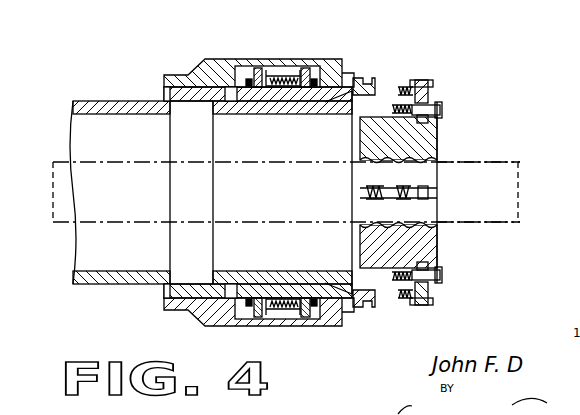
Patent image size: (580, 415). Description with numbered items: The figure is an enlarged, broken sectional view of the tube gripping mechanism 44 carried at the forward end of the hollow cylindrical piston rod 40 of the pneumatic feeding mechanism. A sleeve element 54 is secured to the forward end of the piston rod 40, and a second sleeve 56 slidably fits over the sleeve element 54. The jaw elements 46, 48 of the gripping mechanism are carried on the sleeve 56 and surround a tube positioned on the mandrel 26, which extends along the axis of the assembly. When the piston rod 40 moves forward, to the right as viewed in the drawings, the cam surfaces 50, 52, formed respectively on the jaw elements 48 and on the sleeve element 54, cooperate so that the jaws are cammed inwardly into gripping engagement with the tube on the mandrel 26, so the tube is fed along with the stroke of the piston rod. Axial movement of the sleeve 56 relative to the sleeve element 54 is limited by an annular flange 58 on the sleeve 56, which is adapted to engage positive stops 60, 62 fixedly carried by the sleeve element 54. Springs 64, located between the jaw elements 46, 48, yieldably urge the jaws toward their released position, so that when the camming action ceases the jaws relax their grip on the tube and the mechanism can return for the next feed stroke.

The piston rod 40 is at (122, 101).
The tube gripping mechanism 44 is at (377, 316).
The sleeve element 54 is at (240, 117).
The sleeve 56 is at (353, 84).
The annular flange 58 is at (284, 76).
The positive stop 60 is at (263, 75).
The positive stop 62 is at (307, 72).
The cam surface 50 is at (383, 98).
The jaw element 48 is at (440, 137).
The jaw element 46 is at (441, 250).
The cam surface 52 is at (360, 263).
The spring 64 is at (378, 192).
The mandrel 26 is at (465, 224).